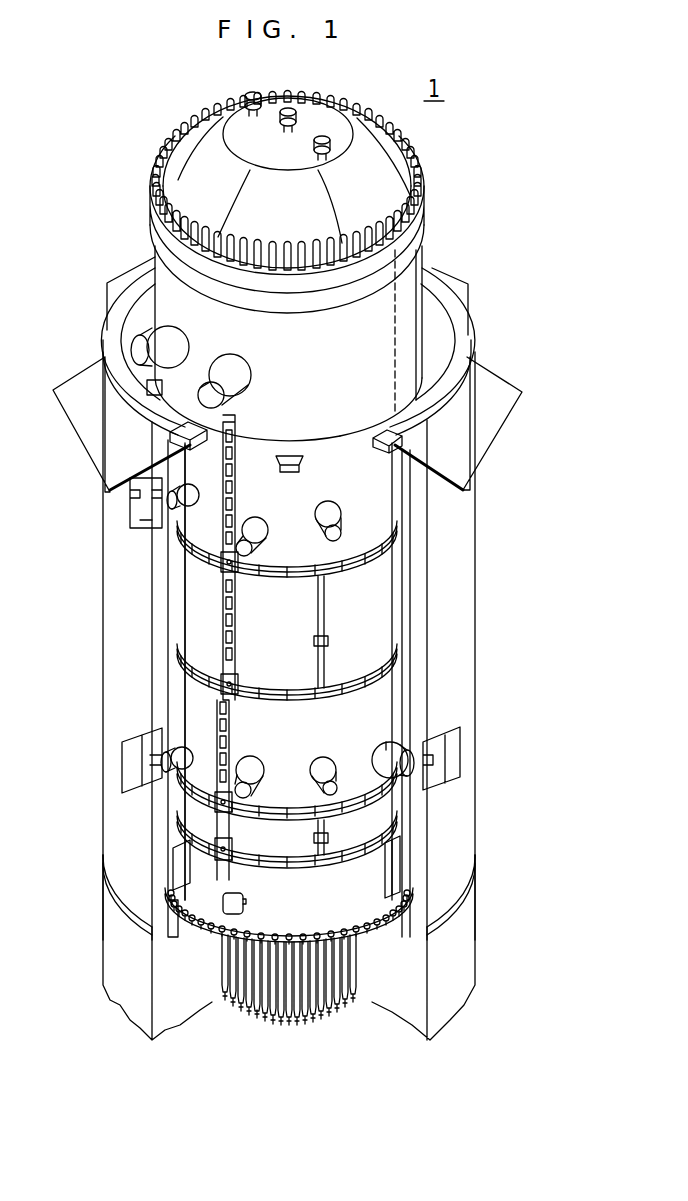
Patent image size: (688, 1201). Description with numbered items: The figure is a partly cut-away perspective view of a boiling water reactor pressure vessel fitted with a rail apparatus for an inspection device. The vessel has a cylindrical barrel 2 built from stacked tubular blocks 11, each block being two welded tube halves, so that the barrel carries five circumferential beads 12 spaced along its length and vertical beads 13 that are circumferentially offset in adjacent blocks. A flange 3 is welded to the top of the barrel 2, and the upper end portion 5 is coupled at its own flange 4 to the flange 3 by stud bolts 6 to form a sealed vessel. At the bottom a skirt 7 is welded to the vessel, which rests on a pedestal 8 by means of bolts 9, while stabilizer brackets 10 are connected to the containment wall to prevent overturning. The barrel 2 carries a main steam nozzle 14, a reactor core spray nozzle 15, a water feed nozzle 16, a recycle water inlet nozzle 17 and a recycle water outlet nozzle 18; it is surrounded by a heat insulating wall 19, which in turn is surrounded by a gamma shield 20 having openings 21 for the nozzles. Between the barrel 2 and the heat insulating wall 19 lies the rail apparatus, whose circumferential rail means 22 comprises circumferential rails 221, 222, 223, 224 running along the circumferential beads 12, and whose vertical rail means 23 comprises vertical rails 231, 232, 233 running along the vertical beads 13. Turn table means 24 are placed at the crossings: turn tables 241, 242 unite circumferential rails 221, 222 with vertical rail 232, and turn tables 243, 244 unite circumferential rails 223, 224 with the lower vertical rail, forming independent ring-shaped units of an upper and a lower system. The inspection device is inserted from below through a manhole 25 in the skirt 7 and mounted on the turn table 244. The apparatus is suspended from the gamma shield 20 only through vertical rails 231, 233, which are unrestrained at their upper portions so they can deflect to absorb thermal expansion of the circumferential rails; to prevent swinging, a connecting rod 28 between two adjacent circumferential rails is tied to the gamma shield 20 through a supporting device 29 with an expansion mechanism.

The cylindrical barrel 2 is at (420, 300).
The flange 3 is at (428, 254).
The flange 4 is at (425, 222).
The upper end portion 5 is at (390, 157).
The stud bolts 6 is at (426, 165).
The skirt 7 is at (405, 856).
The pedestal 8 is at (470, 932).
The bolts 9 is at (365, 936).
The stabilizer brackets 10 is at (373, 449).
The tubular block 11 is at (408, 346).
The circumferential beads 12 is at (378, 437).
The vertical beads 13 is at (322, 387).
The main steam nozzle 14 is at (148, 340).
The reactor core spray nozzle 15 is at (266, 524).
The water feed nozzle 16 is at (340, 508).
The recycle water inlet nozzle 17 is at (332, 754).
The recycle water outlet nozzle 18 is at (397, 740).
The heat insulating wall 19 is at (405, 551).
The gamma shield 20 is at (465, 586).
The openings 21 is at (455, 758).
The circumferential rail means 22 is at (287, 682).
The vertical rail means 23 is at (167, 647).
The turn table means 24 is at (153, 725).
The manhole 25 is at (233, 893).
The connecting rod 28 is at (328, 664).
The supporting device 29 is at (306, 690).
The circumferential rail 221 is at (352, 566).
The circumferential rail 222 is at (344, 698).
The circumferential rail 223 is at (310, 818).
The circumferential rail 224 is at (318, 872).
The vertical rail 231 is at (240, 476).
The vertical rail 232 is at (225, 643).
The vertical rail 233 is at (227, 733).
The turn table 241 is at (236, 568).
The turn table 242 is at (237, 688).
The turn table 243 is at (215, 806).
The turn table 244 is at (231, 860).